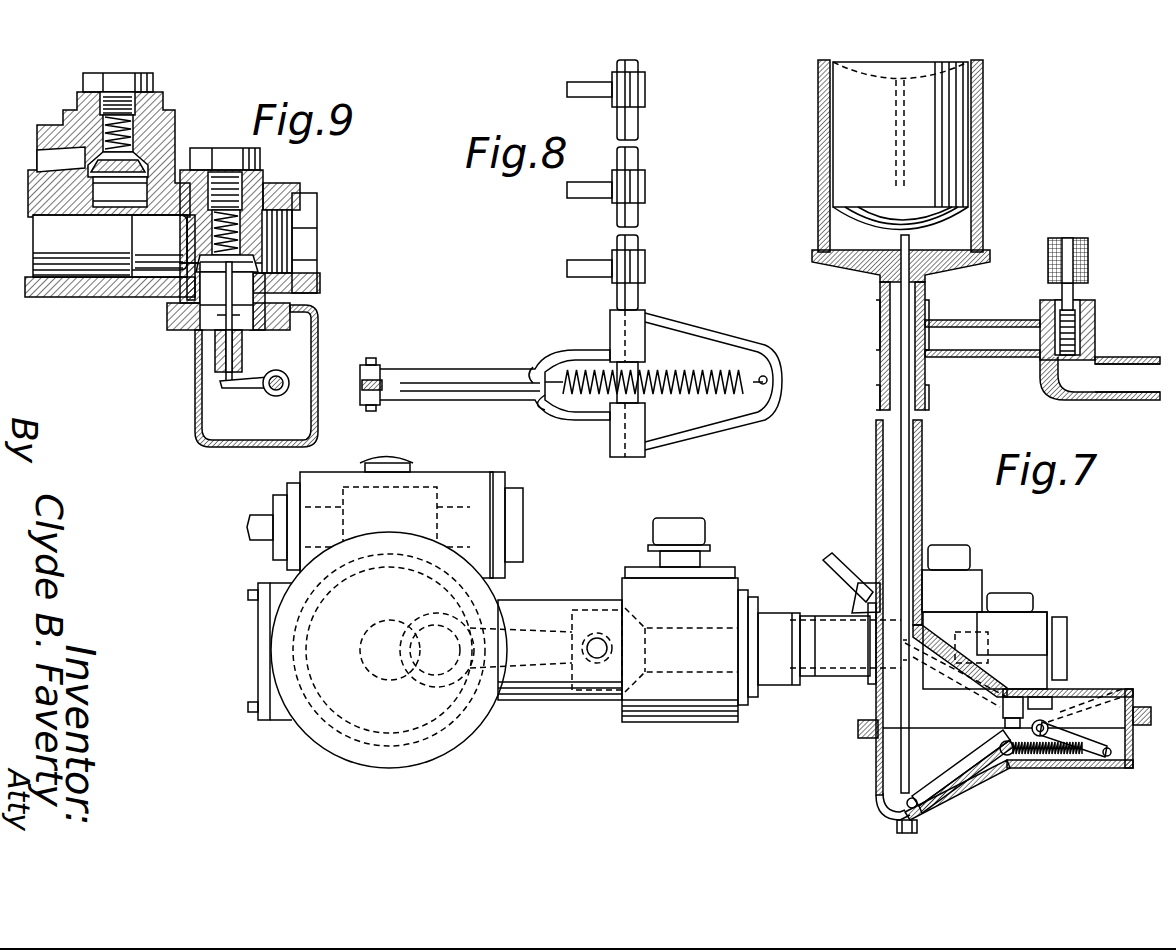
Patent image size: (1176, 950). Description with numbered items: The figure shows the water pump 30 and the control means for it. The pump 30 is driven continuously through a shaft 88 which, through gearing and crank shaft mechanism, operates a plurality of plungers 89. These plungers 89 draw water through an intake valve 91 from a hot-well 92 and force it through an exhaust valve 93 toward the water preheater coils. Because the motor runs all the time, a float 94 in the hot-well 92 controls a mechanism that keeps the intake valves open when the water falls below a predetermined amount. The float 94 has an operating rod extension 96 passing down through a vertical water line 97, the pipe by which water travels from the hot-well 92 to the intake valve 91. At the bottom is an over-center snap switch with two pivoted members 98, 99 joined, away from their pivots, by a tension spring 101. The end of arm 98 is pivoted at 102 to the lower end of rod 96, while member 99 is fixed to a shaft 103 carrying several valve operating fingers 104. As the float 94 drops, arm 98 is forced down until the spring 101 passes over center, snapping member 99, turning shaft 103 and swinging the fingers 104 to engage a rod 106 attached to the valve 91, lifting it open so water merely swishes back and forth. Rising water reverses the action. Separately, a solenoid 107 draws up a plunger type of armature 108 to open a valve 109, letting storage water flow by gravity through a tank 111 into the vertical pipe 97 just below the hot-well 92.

In FIG. 7, the pump 30 is at (669, 715).
In FIG. 7, the shaft 88 is at (262, 532).
In FIG. 9, the plungers 89 is at (160, 262).
In FIG. 7, the plungers 89 is at (845, 662).
In FIG. 9, the intake valve 91 is at (253, 270).
In FIG. 7, the hot-well 92 is at (973, 217).
In FIG. 9, the exhaust valve 93 is at (137, 167).
In FIG. 7, the float 94 is at (963, 140).
In FIG. 8, the operating rod extension 96 is at (380, 378).
In FIG. 7, the operating rod extension 96 is at (909, 491).
In FIG. 7, the vertical water line 97 is at (916, 470).
In FIG. 8, the pivoted member 98 is at (560, 412).
In FIG. 7, the pivoted member 98 is at (995, 765).
In FIG. 8, the pivoted member 99 is at (730, 423).
In FIG. 7, the pivoted member 99 is at (1080, 742).
In FIG. 8, the tension spring 101 is at (707, 370).
In FIG. 7, the tension spring 101 is at (1042, 740).
In FIG. 7, the pivot 102 is at (900, 803).
In FIG. 9, the shaft 103 is at (276, 375).
In FIG. 8, the shaft 103 is at (633, 293).
In FIG. 7, the shaft 103 is at (1043, 723).
In FIG. 9, the valve operating fingers 104 is at (250, 388).
In FIG. 8, the valve operating fingers 104 is at (582, 83).
In FIG. 7, the valve operating fingers 104 is at (1003, 727).
In FIG. 9, the rod 106 is at (227, 350).
In FIG. 7, the solenoid 107 is at (1090, 245).
In FIG. 7, the plunger type of armature 108 is at (1075, 292).
In FIG. 7, the valve 109 is at (1085, 352).
In FIG. 7, the tank 111 is at (1000, 340).